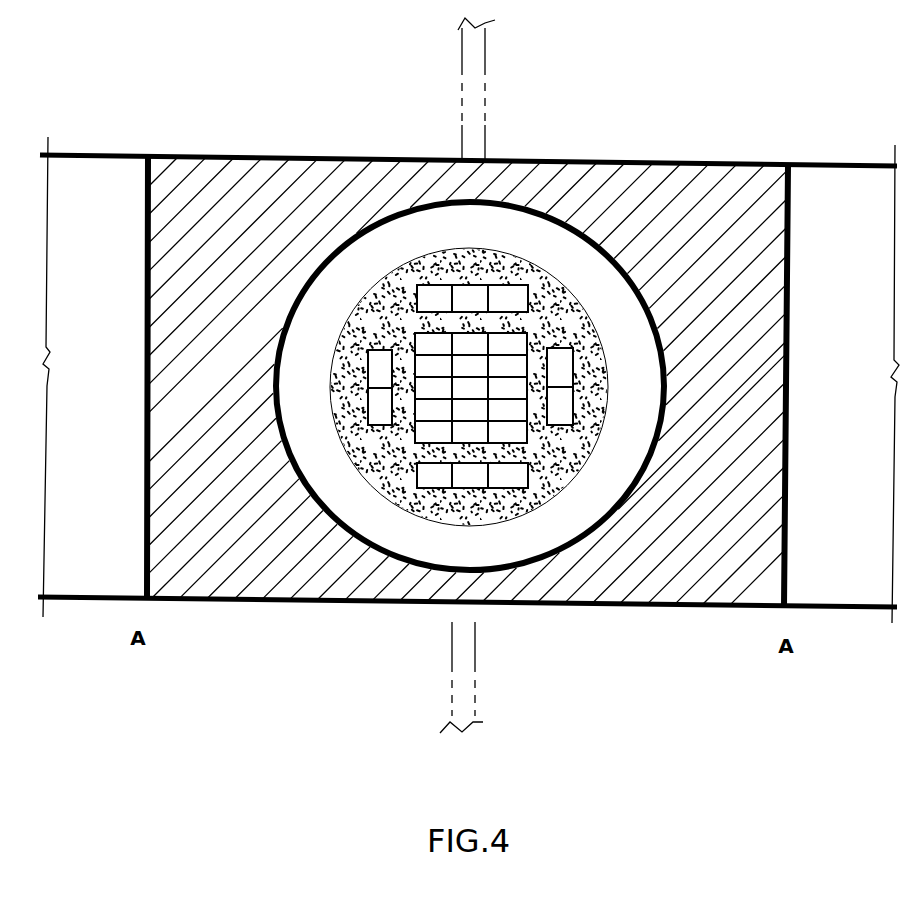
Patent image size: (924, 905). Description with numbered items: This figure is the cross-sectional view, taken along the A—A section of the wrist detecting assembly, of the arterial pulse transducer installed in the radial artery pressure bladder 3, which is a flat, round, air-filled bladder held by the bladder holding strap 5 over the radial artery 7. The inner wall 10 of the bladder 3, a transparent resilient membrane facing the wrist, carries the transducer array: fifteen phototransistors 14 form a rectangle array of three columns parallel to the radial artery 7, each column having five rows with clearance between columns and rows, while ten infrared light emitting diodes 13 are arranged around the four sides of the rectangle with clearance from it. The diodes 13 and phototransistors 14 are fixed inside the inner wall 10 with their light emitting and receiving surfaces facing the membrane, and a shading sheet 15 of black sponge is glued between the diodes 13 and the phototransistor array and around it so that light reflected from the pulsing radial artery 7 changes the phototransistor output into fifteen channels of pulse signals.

The radial artery pressure bladder 3 is at (383, 241).
The bladder holding strap 5 is at (415, 167).
The radial artery 7 is at (483, 125).
The inner wall of the bladder 10 is at (548, 232).
The infrared light emitting diodes 13 is at (468, 298).
The phototransistors 14 is at (468, 385).
The shading sheet 15 is at (563, 457).